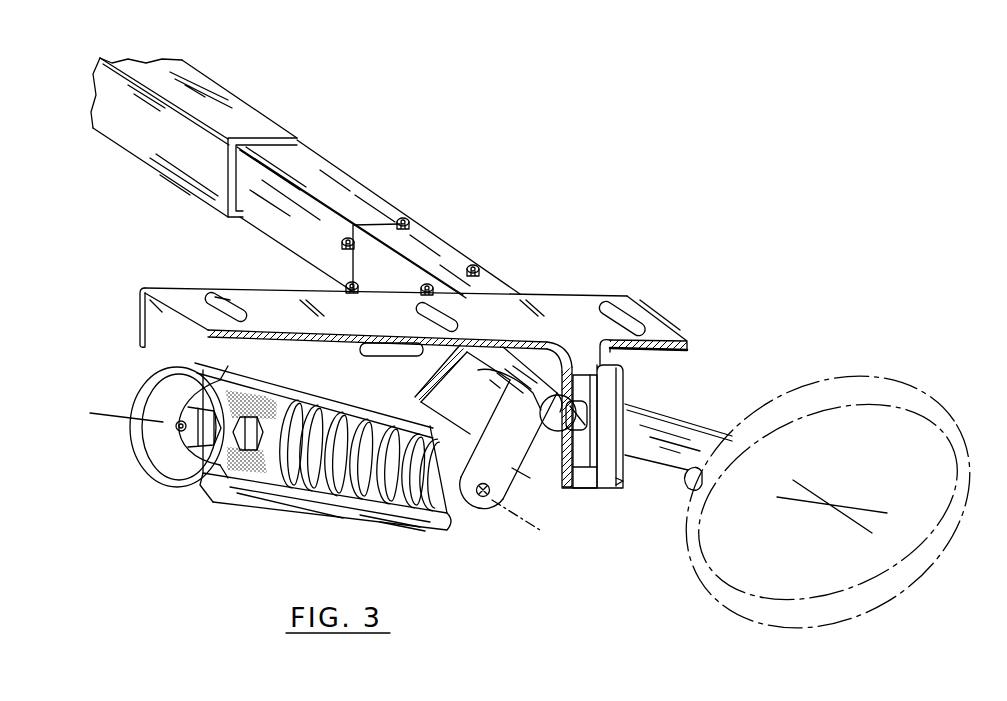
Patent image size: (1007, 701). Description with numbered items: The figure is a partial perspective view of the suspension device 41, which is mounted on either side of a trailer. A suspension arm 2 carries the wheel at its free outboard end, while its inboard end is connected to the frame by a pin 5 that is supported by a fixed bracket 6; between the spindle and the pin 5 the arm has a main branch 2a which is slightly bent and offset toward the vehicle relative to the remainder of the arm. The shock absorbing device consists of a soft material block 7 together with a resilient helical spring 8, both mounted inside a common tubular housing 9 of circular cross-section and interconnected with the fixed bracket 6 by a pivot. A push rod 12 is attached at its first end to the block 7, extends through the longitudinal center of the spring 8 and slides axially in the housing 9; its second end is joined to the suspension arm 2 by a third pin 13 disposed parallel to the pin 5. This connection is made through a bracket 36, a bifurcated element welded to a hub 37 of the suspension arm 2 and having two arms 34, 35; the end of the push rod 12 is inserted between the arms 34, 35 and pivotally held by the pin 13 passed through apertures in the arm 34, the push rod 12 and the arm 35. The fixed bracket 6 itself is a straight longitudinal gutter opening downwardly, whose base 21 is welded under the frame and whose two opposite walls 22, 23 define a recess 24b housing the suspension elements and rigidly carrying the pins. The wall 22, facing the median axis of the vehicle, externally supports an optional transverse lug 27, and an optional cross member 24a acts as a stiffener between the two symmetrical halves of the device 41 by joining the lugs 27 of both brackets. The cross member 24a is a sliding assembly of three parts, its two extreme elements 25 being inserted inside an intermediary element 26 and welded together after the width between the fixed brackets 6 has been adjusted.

The suspension arm 2 is at (702, 413).
The main branch 2a is at (657, 457).
The pin 5 is at (566, 430).
The fixed bracket 6 is at (567, 288).
The soft material block 7 is at (225, 498).
The helical spring 8 is at (403, 490).
The tubular housing 9 is at (277, 500).
The push rod 12 is at (329, 462).
The third pin 13 is at (481, 499).
The base 21 is at (341, 322).
The wall 22 is at (157, 323).
The wall 23 is at (583, 477).
The cross member 24a is at (318, 114).
The recess 24b is at (177, 340).
The extreme element 25 is at (345, 181).
The intermediary element 26 is at (237, 101).
The transverse lug 27 is at (452, 247).
The arm 34 is at (457, 430).
The arm 35 is at (502, 470).
The bracket 36 is at (524, 472).
The hub 37 is at (527, 367).
The suspension device 41 is at (714, 313).